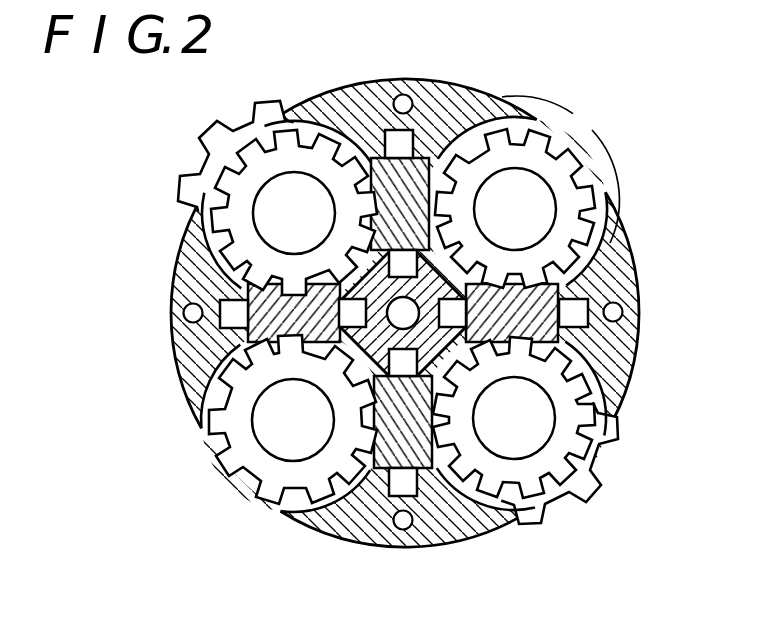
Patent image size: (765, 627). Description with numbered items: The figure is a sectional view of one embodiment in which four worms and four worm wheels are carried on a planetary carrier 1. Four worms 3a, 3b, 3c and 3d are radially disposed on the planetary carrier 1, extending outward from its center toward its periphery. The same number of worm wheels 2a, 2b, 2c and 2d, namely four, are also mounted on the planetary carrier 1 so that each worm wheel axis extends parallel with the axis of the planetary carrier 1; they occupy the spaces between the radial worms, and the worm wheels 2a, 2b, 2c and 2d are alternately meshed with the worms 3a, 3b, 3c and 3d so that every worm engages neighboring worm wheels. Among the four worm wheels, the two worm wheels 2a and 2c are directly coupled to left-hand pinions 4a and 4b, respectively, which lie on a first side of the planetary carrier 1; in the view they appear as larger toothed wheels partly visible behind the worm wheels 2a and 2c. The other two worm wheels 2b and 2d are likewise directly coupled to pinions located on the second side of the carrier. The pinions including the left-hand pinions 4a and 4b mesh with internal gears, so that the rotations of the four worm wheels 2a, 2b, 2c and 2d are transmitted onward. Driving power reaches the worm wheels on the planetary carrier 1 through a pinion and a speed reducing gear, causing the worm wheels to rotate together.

The planetary carrier 1 is at (405, 313).
The worm wheel 2a is at (342, 183).
The worm wheel 2b is at (347, 393).
The worm wheel 2c is at (568, 390).
The worm wheel 2d is at (560, 178).
The worm 3a is at (378, 133).
The worm 3b is at (246, 300).
The worm 3c is at (394, 447).
The worm 3d is at (560, 293).
The left-hand pinion 4a is at (215, 147).
The left-hand pinion 4b is at (590, 488).